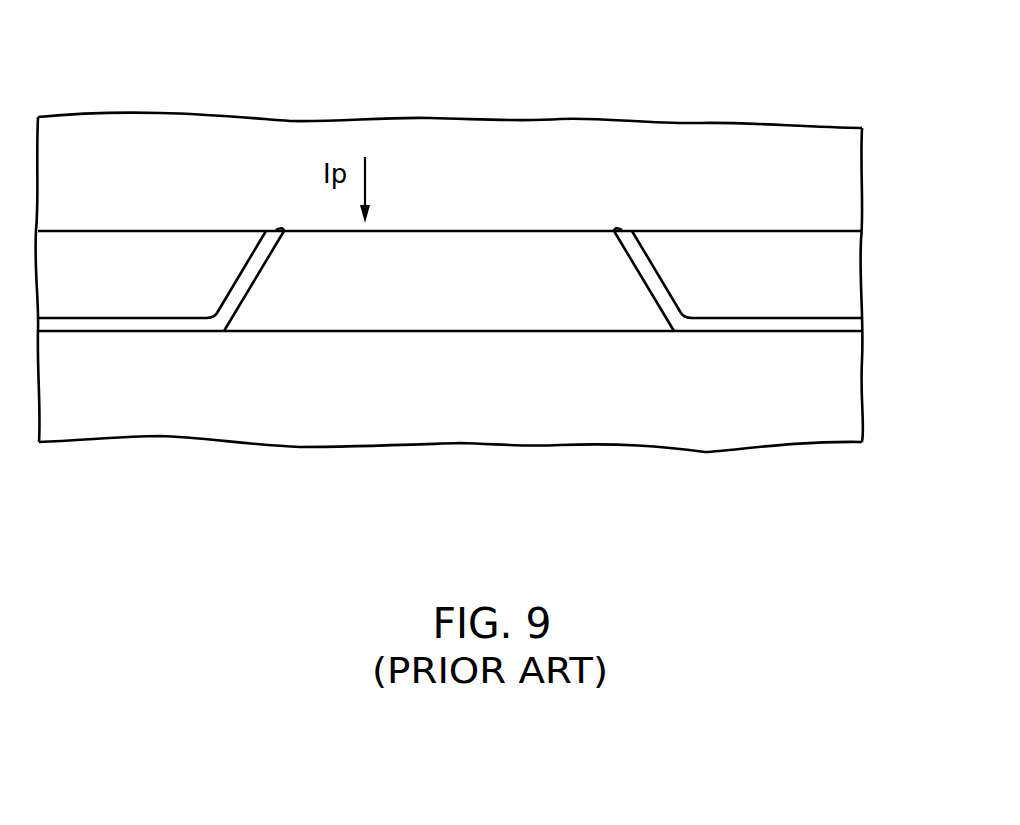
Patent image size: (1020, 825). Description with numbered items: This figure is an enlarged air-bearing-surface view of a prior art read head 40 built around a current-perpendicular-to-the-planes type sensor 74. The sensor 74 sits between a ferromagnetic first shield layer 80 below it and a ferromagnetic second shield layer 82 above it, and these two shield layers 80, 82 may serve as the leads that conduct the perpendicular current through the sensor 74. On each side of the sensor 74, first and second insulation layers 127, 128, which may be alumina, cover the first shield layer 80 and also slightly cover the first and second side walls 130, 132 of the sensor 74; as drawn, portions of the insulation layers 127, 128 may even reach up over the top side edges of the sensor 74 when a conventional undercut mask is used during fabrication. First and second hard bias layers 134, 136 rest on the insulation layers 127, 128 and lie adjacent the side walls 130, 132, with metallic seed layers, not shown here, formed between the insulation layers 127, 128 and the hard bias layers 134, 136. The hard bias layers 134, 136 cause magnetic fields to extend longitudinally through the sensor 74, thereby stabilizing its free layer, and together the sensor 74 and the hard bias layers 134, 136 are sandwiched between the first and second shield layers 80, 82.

The read head 40 is at (278, 98).
The CPP type sensor 74 is at (515, 231).
The first shield layer 80 is at (250, 395).
The second shield layer 82 is at (815, 178).
The first insulation layer 127 is at (100, 323).
The second insulation layer 128 is at (800, 325).
The first side wall 130 is at (255, 263).
The second side wall 132 is at (640, 263).
The first hard bias layer 134 is at (105, 265).
The second hard bias layer 136 is at (805, 242).